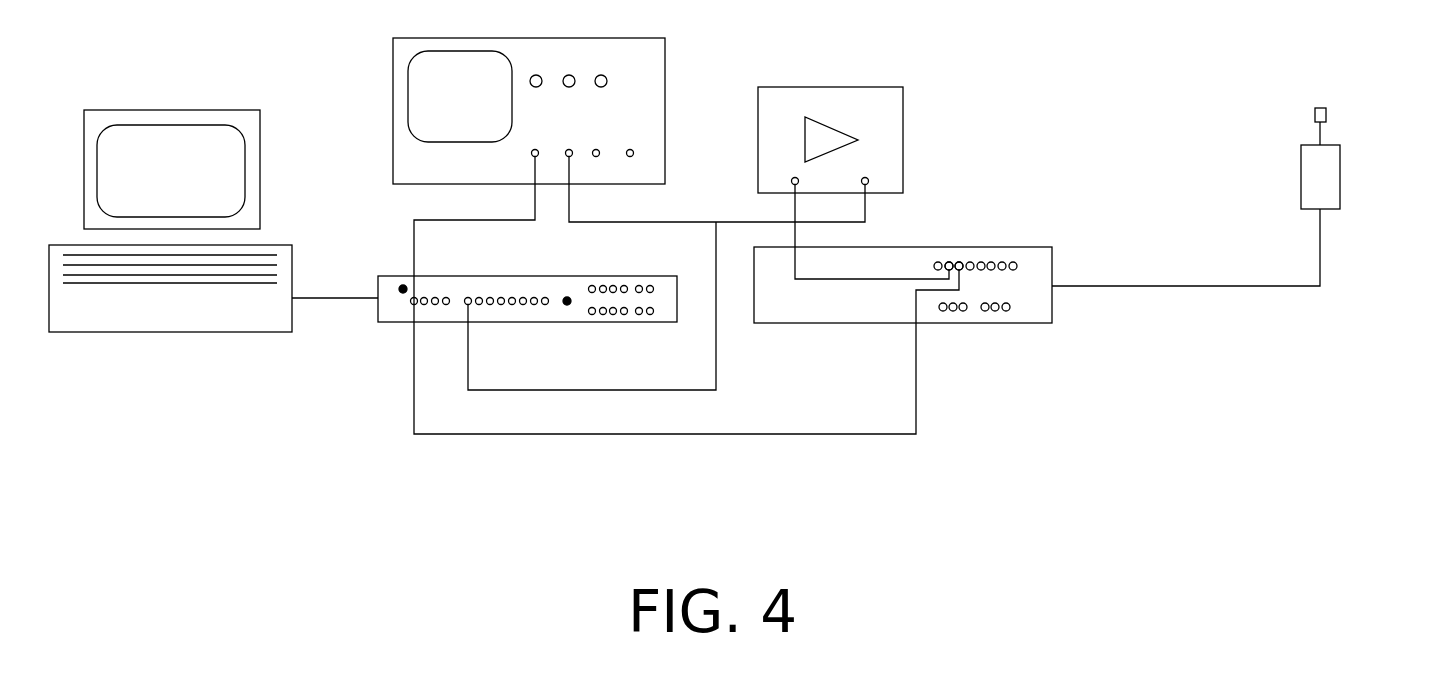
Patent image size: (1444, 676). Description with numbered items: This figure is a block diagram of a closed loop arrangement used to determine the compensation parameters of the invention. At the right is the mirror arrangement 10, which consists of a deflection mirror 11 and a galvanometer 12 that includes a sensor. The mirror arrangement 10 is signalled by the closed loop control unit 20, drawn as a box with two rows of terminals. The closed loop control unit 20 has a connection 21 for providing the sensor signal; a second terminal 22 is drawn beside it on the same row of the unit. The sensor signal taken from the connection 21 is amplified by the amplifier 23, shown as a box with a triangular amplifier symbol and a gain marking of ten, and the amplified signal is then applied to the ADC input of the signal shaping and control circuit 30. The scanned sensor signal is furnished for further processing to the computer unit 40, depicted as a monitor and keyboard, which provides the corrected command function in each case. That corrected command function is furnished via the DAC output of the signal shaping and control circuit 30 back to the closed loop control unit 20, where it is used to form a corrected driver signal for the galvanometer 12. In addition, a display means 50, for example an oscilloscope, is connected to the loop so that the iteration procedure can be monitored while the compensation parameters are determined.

The mirror arrangement 10 is at (1343, 141).
The deflection mirror 11 is at (1328, 112).
The galvanometer 12 is at (1331, 193).
The closed loop control unit 20 is at (1023, 313).
The connection 21 is at (949, 261).
The output terminal 22 is at (961, 261).
The amplifier 23 is at (887, 148).
The signal shaping and control circuit 30 is at (573, 288).
The computer unit 40 is at (268, 326).
The display means 50 is at (650, 78).